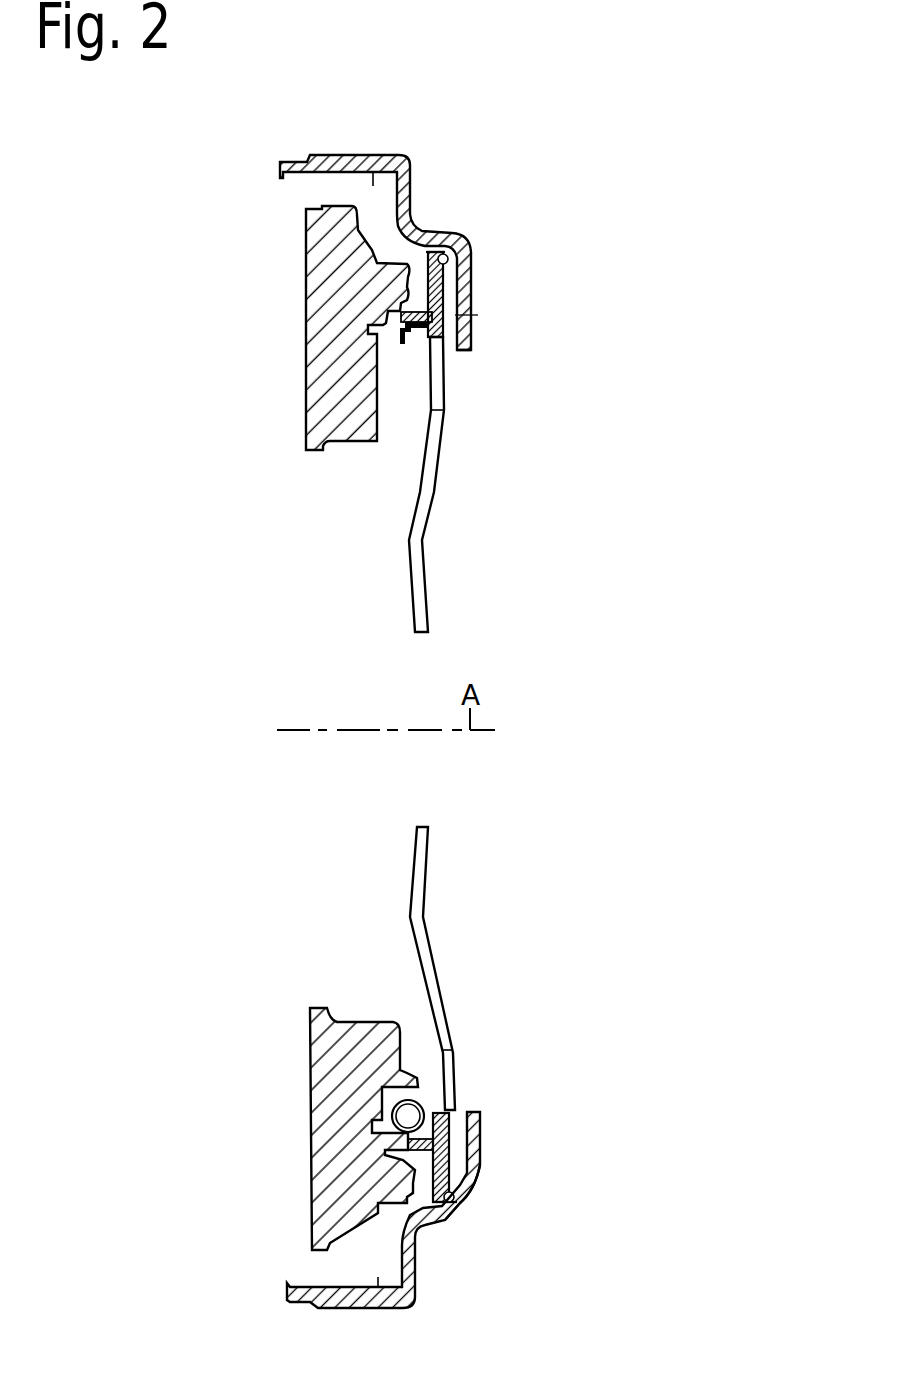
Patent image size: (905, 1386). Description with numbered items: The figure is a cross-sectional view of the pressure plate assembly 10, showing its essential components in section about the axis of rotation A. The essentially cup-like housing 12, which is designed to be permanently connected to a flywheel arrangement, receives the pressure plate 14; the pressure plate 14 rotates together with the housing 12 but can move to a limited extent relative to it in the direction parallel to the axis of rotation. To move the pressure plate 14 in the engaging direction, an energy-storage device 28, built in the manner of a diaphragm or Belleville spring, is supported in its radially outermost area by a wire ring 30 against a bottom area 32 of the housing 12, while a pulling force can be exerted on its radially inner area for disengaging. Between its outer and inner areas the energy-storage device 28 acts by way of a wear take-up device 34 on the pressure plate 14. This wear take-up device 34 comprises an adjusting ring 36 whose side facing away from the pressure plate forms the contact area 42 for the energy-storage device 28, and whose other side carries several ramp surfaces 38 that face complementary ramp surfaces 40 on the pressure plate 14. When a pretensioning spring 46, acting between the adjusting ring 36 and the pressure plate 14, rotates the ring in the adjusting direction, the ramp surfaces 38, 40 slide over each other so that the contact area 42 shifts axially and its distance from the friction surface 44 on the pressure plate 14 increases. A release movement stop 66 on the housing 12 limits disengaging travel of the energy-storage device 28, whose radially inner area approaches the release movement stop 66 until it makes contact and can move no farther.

The pressure plate assembly 10 is at (530, 125).
The housing 12 is at (410, 218).
The pressure plate 14 is at (305, 300).
The energy-storage device 28 is at (423, 903).
The wire ring 30 is at (453, 1192).
The bottom area 32 is at (478, 1182).
The wear take-up device 34 is at (407, 395).
The adjusting ring 36 is at (431, 298).
The ramp surfaces 38 is at (405, 321).
The complementary ramp surfaces 40 is at (440, 1140).
The contact area 42 is at (433, 1141).
The friction surface 44 is at (310, 1125).
The pretensioning spring 46 is at (393, 1106).
The release movement stop 66 is at (462, 354).